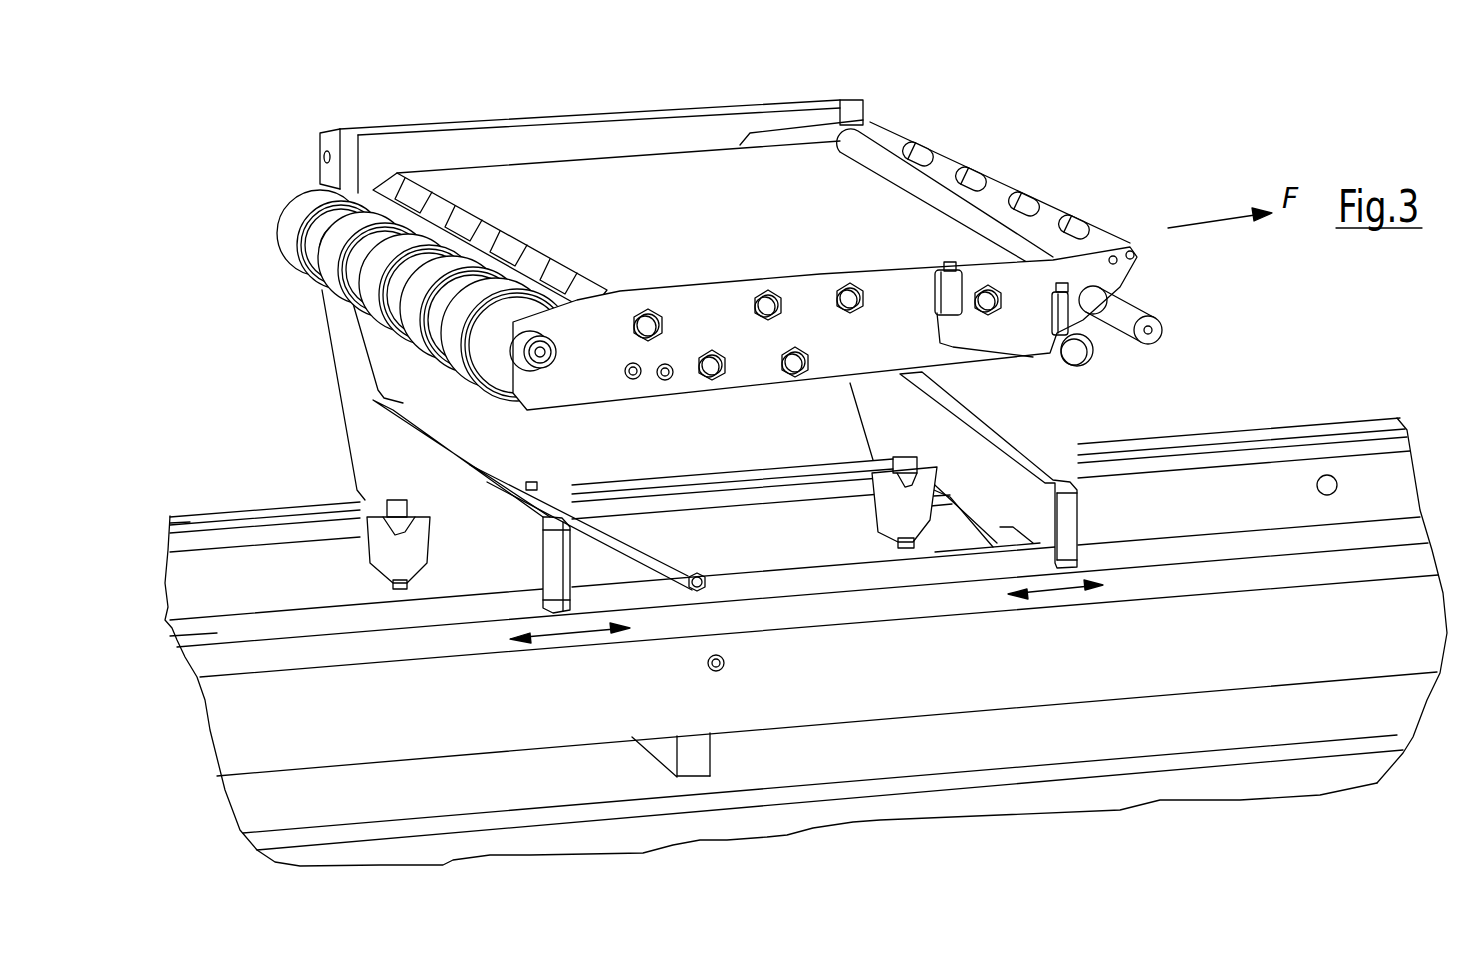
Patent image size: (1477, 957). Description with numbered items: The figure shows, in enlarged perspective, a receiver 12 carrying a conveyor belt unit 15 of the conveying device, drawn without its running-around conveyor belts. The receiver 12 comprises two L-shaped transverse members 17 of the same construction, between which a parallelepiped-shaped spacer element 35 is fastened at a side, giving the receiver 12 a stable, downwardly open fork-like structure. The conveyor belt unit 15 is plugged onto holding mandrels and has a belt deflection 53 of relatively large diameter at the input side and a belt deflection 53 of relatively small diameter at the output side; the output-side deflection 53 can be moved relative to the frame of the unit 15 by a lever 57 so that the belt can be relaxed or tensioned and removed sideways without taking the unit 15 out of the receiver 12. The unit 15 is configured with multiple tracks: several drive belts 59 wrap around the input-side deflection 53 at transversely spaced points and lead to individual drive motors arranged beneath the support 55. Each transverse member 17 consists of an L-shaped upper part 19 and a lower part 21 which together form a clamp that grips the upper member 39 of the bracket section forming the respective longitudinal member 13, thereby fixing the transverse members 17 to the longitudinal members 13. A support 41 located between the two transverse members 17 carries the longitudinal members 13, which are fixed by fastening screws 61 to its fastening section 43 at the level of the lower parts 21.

The receiver 12 is at (280, 398).
The longitudinal member 13 is at (1380, 440).
The conveyor belt unit 15 is at (1070, 146).
The transverse member 17 is at (285, 471).
The upper part 19 is at (412, 448).
The lower part 21 is at (385, 553).
The spacer element 35 is at (632, 140).
The upper member 39 is at (188, 523).
The support 41 is at (650, 750).
The fastening section 43 is at (615, 567).
The deflection 53 is at (305, 200).
The support 55 is at (690, 221).
The lever 57 is at (1125, 305).
The drive belt 59 is at (397, 197).
The fastening screw 61 is at (542, 484).